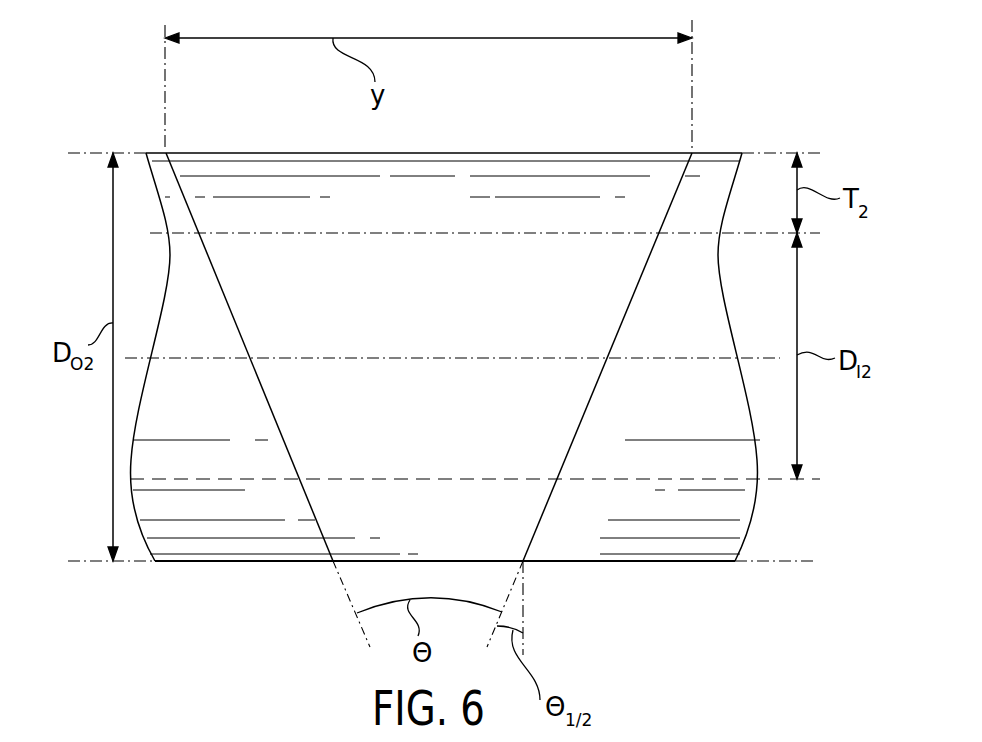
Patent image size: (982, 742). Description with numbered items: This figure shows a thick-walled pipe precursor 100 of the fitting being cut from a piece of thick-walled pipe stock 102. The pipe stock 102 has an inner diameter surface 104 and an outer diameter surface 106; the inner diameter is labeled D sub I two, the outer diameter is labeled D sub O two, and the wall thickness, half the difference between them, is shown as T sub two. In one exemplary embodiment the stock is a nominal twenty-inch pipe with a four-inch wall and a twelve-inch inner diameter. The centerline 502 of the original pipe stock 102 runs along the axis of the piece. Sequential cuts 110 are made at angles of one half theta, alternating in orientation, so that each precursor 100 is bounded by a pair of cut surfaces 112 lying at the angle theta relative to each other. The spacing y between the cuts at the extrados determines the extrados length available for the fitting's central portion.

The precursor 100 is at (501, 137).
The thick-walled pipe stock 102 is at (679, 594).
The inner diameter surface 104 is at (683, 480).
The outer diameter surface 106 is at (688, 562).
The sequential cuts 110 is at (228, 262).
The cut surfaces 112 is at (283, 436).
The centerline 502 is at (765, 357).